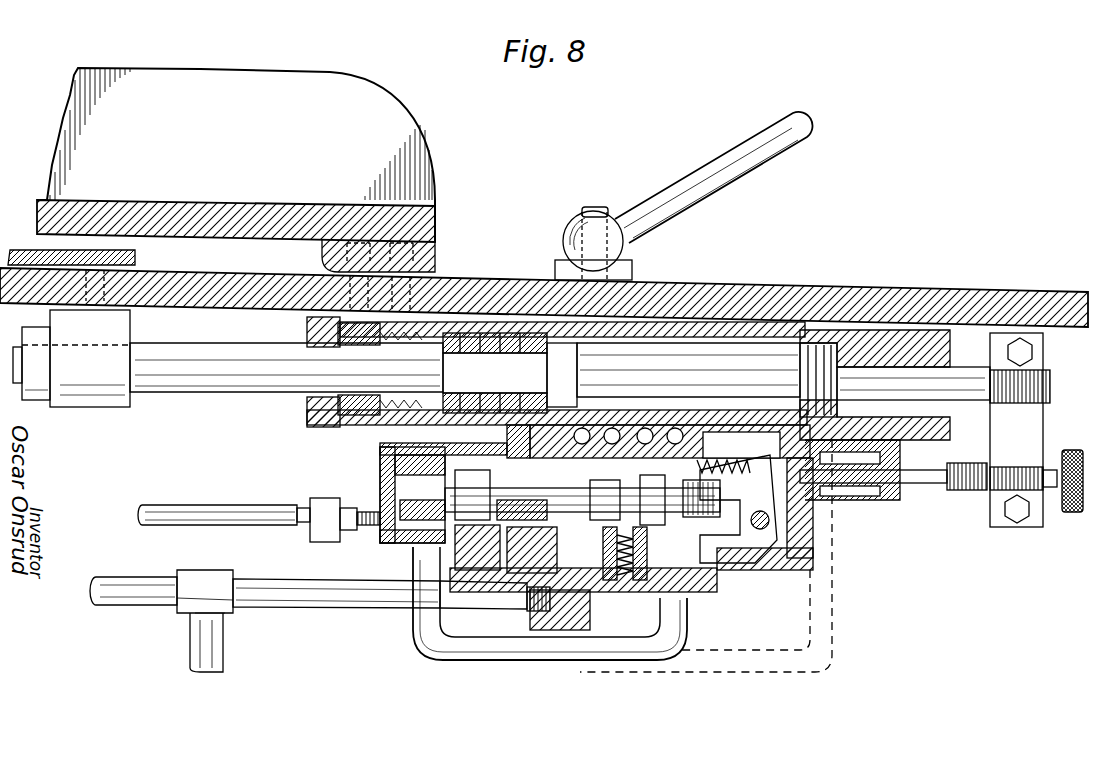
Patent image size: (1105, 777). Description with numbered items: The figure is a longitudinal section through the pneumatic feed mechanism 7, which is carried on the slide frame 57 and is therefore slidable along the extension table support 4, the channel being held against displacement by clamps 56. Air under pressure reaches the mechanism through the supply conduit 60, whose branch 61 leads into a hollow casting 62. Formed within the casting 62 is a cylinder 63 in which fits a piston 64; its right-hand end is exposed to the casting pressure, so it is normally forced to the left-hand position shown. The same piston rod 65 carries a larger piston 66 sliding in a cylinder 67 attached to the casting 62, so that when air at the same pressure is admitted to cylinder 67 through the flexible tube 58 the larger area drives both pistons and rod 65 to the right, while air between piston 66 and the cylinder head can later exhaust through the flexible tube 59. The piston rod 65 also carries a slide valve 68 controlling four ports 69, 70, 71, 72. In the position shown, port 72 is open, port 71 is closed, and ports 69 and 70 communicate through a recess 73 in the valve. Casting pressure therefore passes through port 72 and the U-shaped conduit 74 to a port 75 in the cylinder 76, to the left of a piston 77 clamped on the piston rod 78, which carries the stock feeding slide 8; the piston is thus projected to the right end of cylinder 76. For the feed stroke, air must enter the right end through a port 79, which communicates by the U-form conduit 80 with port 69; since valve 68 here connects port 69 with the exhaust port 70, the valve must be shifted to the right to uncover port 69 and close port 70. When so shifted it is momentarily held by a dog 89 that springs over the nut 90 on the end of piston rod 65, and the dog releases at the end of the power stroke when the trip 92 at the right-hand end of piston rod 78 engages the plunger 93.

The table support 4 is at (940, 291).
The pneumatic feed mechanism 7 is at (795, 575).
The horizontal slide 8 is at (20, 250).
The clamps 56 is at (782, 158).
The slide frame 57 is at (210, 200).
The flexible tube 58 is at (126, 585).
The flexible tube 59 is at (222, 510).
The conduit 60 is at (210, 650).
The branch 61 is at (274, 587).
The hollow casting 62 is at (730, 570).
The cylinder 63 is at (497, 552).
The piston 64 is at (501, 503).
The piston rod 65 is at (582, 496).
The piston 66 is at (380, 453).
The cylinder 67 is at (403, 447).
The slide valve 68 is at (606, 553).
The port 69 is at (586, 428).
The exhaust port 70 is at (618, 428).
The port 71 is at (650, 428).
The port 72 is at (690, 440).
The recess 73 is at (627, 500).
The U-shaped conduit 74 is at (690, 611).
The port 75 is at (435, 372).
The cylinder 76 is at (455, 318).
The piston 77 is at (480, 352).
The piston rod 78 is at (175, 375).
The port 79 is at (845, 380).
The conduit 80 is at (835, 645).
The dog 89 is at (728, 535).
The nut 90 is at (680, 528).
The trip 92 is at (955, 493).
The plunger 93 is at (905, 472).